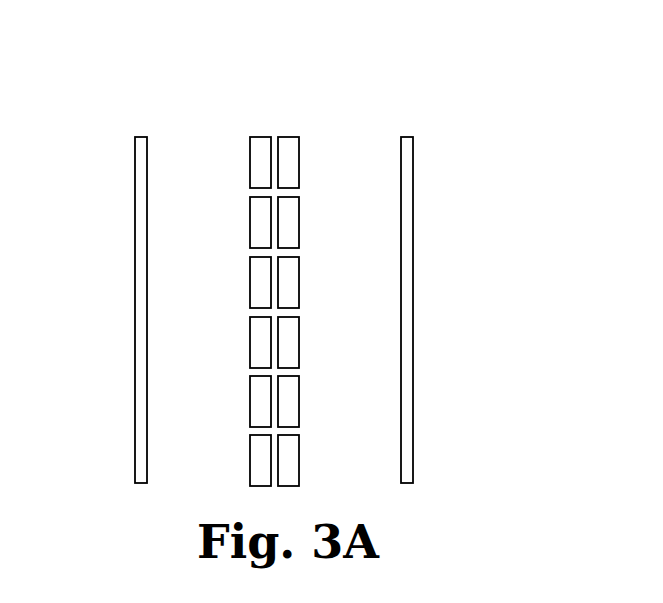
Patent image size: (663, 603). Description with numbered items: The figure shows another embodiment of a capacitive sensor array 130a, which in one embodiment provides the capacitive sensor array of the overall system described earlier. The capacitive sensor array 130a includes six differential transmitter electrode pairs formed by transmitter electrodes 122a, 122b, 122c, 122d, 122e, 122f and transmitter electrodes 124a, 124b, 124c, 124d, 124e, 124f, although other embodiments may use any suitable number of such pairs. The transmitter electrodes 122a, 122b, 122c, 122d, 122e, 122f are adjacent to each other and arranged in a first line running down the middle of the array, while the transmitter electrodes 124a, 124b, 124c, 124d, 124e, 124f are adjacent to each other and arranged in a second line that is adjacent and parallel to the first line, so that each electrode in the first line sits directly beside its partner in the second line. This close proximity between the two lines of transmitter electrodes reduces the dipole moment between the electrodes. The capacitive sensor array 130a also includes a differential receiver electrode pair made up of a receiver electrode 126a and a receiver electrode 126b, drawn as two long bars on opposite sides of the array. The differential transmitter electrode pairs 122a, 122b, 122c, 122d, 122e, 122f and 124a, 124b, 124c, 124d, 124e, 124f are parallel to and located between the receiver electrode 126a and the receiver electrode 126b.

The capacitive sensor array 130a is at (293, 60).
The receiver electrode 126a is at (135, 148).
The receiver electrode 126b is at (401, 150).
The transmitter electrode 122a is at (250, 165).
The transmitter electrode 122b is at (250, 225).
The transmitter electrode 122c is at (250, 285).
The transmitter electrode 122d is at (250, 345).
The transmitter electrode 122e is at (250, 404).
The transmitter electrode 122f is at (250, 464).
The transmitter electrode 124a is at (299, 160).
The transmitter electrode 124b is at (299, 220).
The transmitter electrode 124c is at (299, 280).
The transmitter electrode 124d is at (299, 340).
The transmitter electrode 124e is at (299, 399).
The transmitter electrode 124f is at (299, 457).